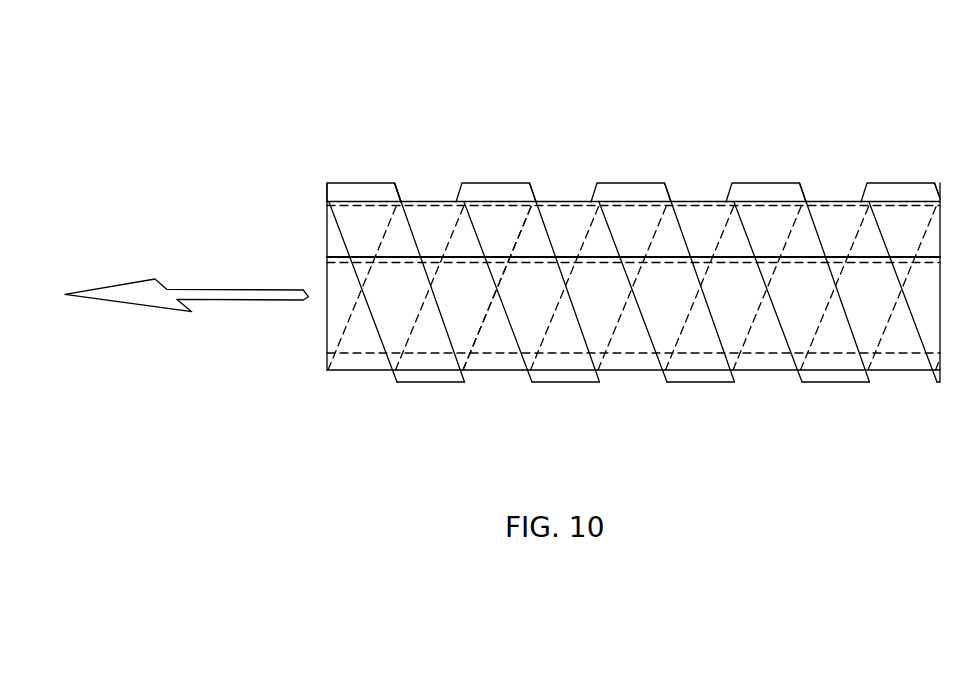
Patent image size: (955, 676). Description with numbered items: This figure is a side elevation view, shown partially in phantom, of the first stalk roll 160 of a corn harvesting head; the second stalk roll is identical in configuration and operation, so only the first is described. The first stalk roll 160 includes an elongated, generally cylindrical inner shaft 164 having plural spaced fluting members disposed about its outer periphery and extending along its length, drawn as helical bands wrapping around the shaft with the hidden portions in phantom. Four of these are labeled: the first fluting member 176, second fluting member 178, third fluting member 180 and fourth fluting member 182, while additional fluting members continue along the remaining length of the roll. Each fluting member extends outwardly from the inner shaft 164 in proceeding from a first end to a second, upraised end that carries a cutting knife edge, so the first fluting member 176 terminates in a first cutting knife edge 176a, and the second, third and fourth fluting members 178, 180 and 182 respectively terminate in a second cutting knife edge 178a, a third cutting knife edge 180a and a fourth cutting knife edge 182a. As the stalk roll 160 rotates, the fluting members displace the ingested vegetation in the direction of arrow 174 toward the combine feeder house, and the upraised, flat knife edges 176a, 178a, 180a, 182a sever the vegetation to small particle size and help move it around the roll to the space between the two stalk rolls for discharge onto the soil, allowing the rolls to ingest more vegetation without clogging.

The first stalk roll 160 is at (575, 120).
The inner shaft 164 is at (702, 203).
The arrow 174 is at (198, 293).
The first fluting member 176 is at (357, 183).
The first cutting knife edge 176a is at (388, 184).
The second fluting member 178 is at (402, 201).
The second cutting knife edge 178a is at (401, 260).
The third fluting member 180 is at (380, 331).
The third cutting knife edge 180a is at (422, 348).
The fourth fluting member 182 is at (482, 334).
The fourth cutting knife edge 182a is at (464, 258).